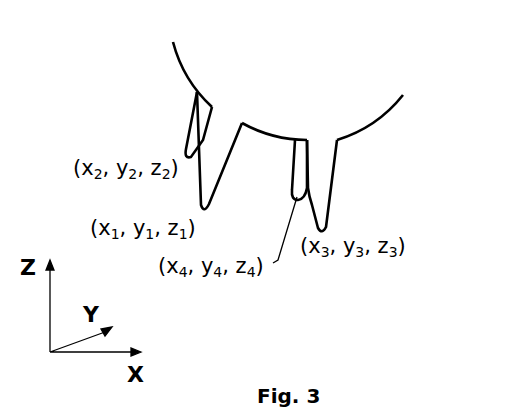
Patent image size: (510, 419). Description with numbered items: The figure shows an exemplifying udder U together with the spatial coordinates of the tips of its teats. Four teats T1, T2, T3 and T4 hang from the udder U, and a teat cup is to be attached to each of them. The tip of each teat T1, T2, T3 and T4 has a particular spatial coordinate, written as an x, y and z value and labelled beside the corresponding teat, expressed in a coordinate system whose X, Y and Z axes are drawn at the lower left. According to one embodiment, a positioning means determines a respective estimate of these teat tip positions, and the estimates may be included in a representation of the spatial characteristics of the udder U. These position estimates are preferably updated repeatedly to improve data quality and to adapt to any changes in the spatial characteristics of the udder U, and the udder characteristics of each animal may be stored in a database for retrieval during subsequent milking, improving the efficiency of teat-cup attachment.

The udder U is at (310, 63).
The teat T1 is at (198, 195).
The teat T2 is at (188, 113).
The teat T3 is at (330, 210).
The teat T4 is at (300, 177).